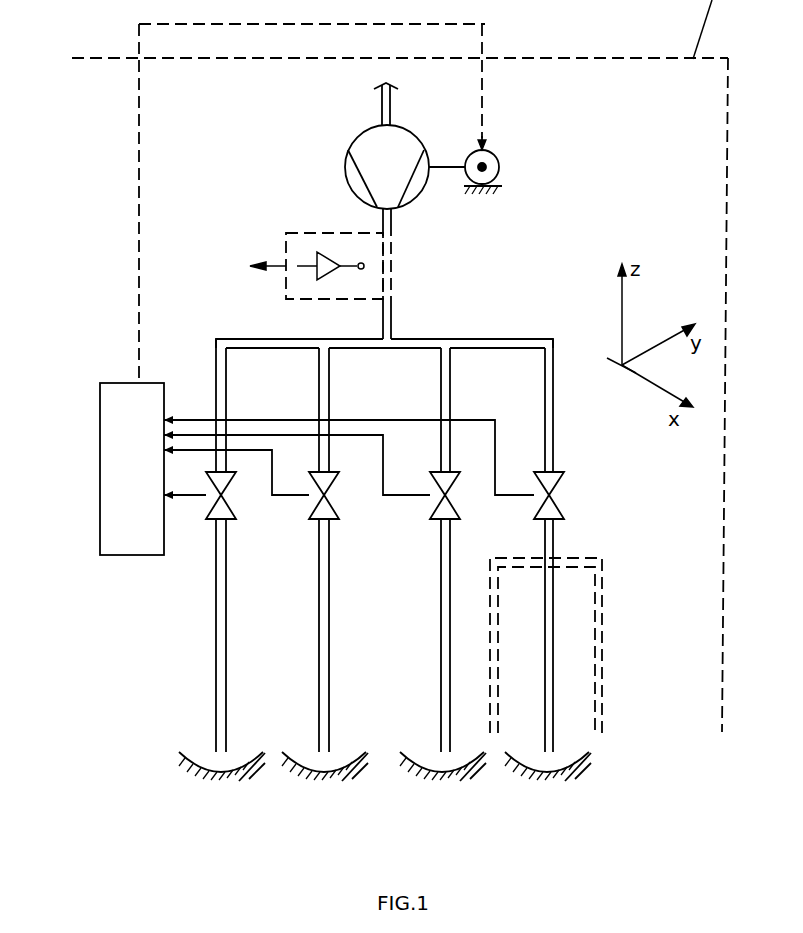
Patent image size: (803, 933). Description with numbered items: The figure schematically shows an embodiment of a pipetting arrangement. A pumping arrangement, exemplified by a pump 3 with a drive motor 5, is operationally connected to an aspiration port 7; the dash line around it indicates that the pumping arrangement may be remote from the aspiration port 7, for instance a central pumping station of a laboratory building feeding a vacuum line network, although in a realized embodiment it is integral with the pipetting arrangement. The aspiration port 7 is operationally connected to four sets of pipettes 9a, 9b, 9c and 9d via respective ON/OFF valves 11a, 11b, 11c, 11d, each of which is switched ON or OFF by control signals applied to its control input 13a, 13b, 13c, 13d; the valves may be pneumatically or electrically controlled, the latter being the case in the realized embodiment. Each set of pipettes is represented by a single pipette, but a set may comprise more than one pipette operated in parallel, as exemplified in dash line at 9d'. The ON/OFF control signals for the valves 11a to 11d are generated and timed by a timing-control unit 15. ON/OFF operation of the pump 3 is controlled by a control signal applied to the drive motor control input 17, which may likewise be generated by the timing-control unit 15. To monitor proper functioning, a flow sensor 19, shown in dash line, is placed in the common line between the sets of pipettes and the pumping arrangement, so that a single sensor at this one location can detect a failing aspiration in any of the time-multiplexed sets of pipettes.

The pump 3 is at (345, 170).
The drive motor 5 is at (499, 166).
The aspiration port 7 is at (392, 307).
The set of pipettes 9a is at (214, 736).
The set of pipettes 9b is at (318, 736).
The set of pipettes 9c is at (440, 736).
The set of pipettes 9d is at (533, 560).
The additional pipette operated in parallel 9d' is at (582, 645).
The ON/OFF valve 11a is at (232, 508).
The ON/OFF valve 11b is at (335, 508).
The ON/OFF valve 11c is at (456, 514).
The ON/OFF valve 11d is at (560, 514).
The control input 13a is at (188, 497).
The control input 13b is at (290, 490).
The control input 13c is at (409, 490).
The control input 13d is at (515, 490).
The timing-control unit 15 is at (100, 471).
The drive motor control input 17 is at (495, 87).
The flow sensor 19 is at (285, 286).